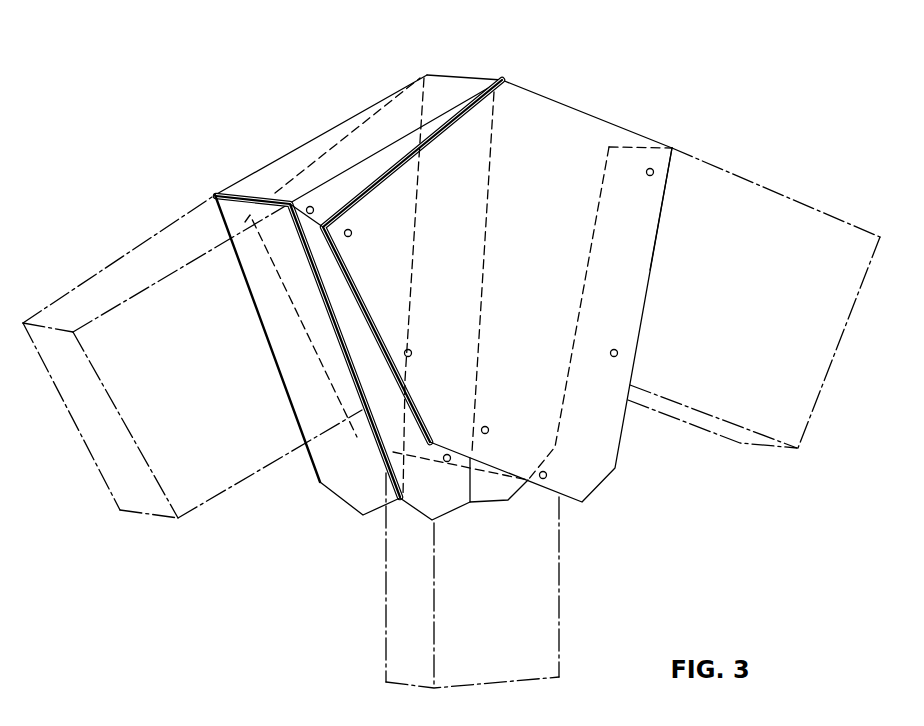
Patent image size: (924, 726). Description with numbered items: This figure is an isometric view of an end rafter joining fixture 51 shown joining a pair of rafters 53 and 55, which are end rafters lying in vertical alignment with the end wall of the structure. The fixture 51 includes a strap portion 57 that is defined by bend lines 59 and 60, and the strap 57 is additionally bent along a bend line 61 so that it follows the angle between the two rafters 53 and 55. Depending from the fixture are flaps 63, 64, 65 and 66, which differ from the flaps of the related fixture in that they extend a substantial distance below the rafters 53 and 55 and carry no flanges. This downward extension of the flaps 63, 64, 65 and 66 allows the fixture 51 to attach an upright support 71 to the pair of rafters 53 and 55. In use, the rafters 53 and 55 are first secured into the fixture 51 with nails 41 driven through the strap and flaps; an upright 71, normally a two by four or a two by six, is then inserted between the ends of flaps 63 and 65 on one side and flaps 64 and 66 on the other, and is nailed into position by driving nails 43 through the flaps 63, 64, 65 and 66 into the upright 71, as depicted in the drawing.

The nails 41 is at (314, 209).
The nails 43 is at (487, 427).
The end rafter joining fixture 51 is at (576, 106).
The rafter 53 is at (123, 262).
The rafter 55 is at (862, 227).
The strap portion 57 is at (235, 193).
The bend line 59 is at (315, 135).
The bend line 60 is at (632, 132).
The bend line 61 is at (442, 73).
The flap 63 is at (502, 365).
The flap 64 is at (502, 488).
The flap 65 is at (340, 303).
The flap 66 is at (350, 493).
The upright support 71 is at (508, 580).